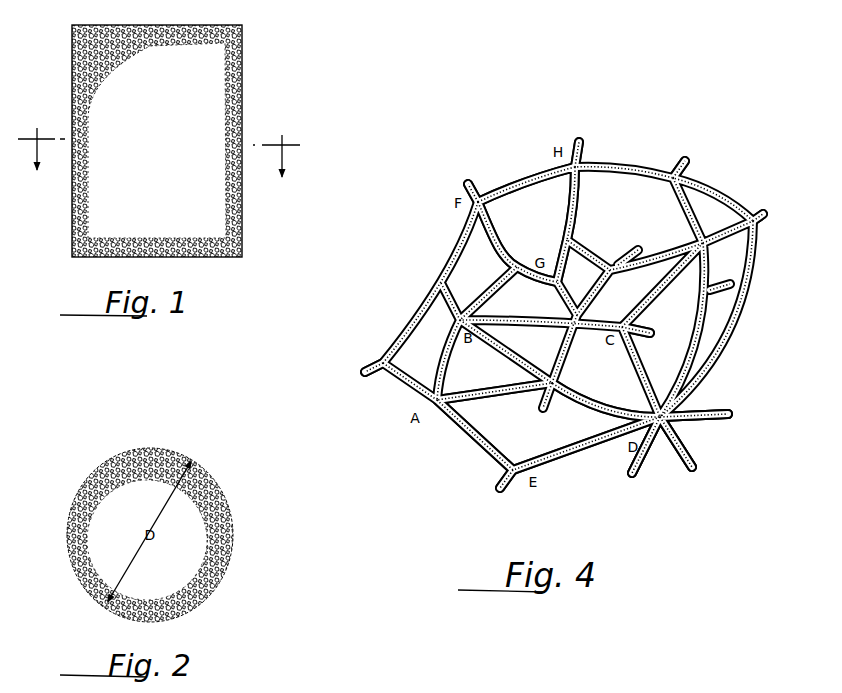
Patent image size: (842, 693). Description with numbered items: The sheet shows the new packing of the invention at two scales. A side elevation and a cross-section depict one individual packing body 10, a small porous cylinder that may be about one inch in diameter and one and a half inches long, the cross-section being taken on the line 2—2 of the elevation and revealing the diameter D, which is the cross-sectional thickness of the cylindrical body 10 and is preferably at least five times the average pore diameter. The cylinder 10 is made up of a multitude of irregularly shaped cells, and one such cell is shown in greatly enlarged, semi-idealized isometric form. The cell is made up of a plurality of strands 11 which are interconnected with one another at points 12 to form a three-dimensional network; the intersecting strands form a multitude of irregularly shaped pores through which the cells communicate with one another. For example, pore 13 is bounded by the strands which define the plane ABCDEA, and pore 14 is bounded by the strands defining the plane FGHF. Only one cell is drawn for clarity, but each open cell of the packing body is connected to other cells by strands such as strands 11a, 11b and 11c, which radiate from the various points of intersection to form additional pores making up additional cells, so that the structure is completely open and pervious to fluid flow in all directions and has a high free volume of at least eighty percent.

In FIG. 1, the section line 2— 2 is at (159, 164).
In FIG. 1, the packing body 10 is at (250, 90).
In FIG. 2, the packing body 10 is at (239, 504).
In FIG. 4, the strands 11 is at (527, 178).
In FIG. 4, the strand 11a is at (652, 465).
In FIG. 4, the strand 11b is at (681, 465).
In FIG. 4, the strand 11c is at (713, 425).
In FIG. 4, the points of interconnection 12 is at (681, 177).
In FIG. 4, the pore 13 is at (531, 436).
In FIG. 4, the pore 14 is at (549, 200).